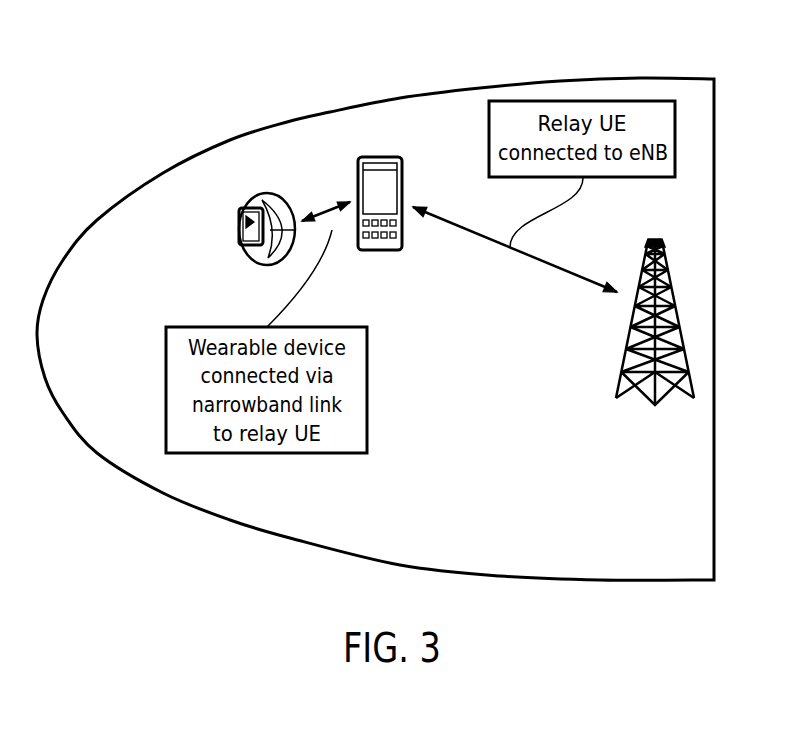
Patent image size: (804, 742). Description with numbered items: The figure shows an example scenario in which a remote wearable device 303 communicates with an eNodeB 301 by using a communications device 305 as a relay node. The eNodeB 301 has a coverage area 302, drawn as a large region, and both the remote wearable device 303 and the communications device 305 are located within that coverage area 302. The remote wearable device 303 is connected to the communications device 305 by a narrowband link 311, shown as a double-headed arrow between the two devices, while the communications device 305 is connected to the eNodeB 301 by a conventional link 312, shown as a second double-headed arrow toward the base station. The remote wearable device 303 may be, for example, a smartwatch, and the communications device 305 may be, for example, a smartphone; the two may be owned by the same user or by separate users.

The eNodeB 301 is at (683, 318).
The coverage area 302 is at (643, 78).
The remote wearable device 303 is at (237, 222).
The communications device 305 is at (375, 250).
The narrowband link 311 is at (320, 207).
The conventional link 312 is at (547, 267).